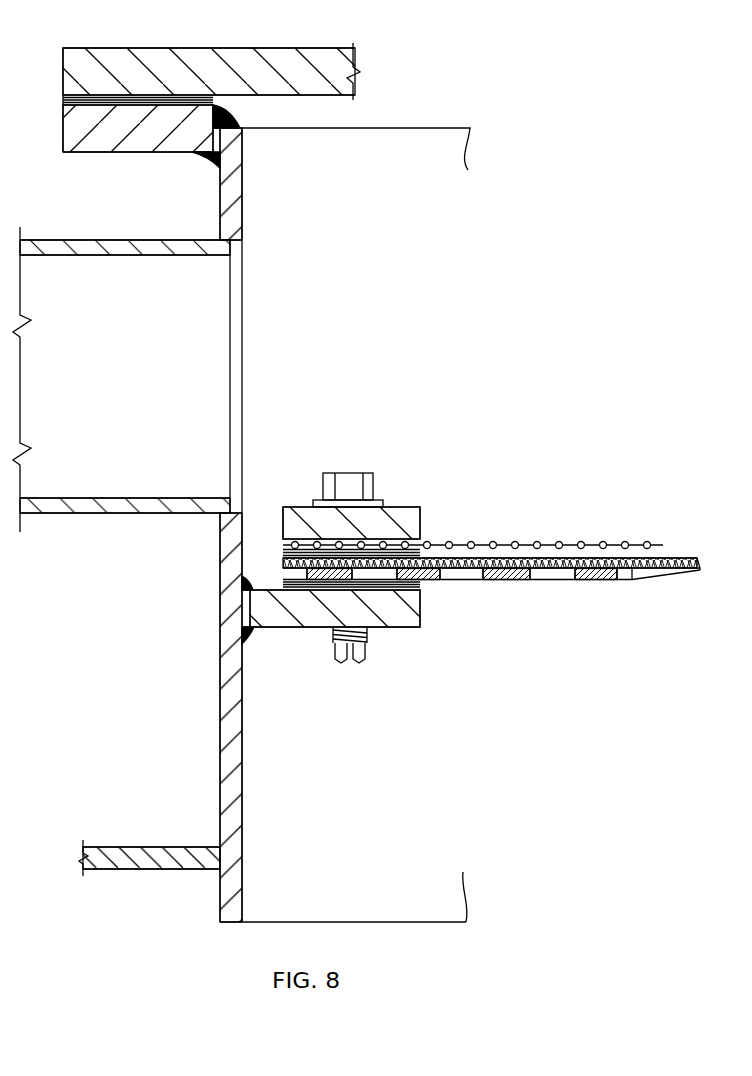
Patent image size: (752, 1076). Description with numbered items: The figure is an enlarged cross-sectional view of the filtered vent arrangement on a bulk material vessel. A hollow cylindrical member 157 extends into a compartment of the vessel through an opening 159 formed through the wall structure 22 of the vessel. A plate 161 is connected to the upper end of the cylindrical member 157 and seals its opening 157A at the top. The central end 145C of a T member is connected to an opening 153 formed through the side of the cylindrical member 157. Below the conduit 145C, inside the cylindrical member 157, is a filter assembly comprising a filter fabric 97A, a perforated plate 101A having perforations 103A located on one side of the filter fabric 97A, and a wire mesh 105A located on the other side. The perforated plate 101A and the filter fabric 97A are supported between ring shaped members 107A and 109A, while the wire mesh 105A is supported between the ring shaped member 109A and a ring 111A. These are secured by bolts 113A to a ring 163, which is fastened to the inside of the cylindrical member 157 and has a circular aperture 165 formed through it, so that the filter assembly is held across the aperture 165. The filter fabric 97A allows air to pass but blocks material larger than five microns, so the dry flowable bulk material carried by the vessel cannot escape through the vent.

The wall structure 22 is at (120, 873).
The filter fabric 97A is at (672, 572).
The perforated plate 101A is at (505, 580).
The perforations 103A is at (565, 580).
The wire mesh 105A is at (582, 542).
The ring shaped member 107A is at (422, 587).
The ring shaped member 109A is at (283, 553).
The ring 111A is at (402, 507).
The bolts 113A is at (345, 473).
The central end of T member 145C is at (90, 247).
The opening 153 is at (241, 252).
The hollow cylindrical member 157 is at (220, 778).
The opening 157A is at (392, 142).
The opening 159 is at (218, 873).
The plate 161 is at (297, 58).
The ring 163 is at (290, 625).
The circular aperture 165 is at (420, 612).